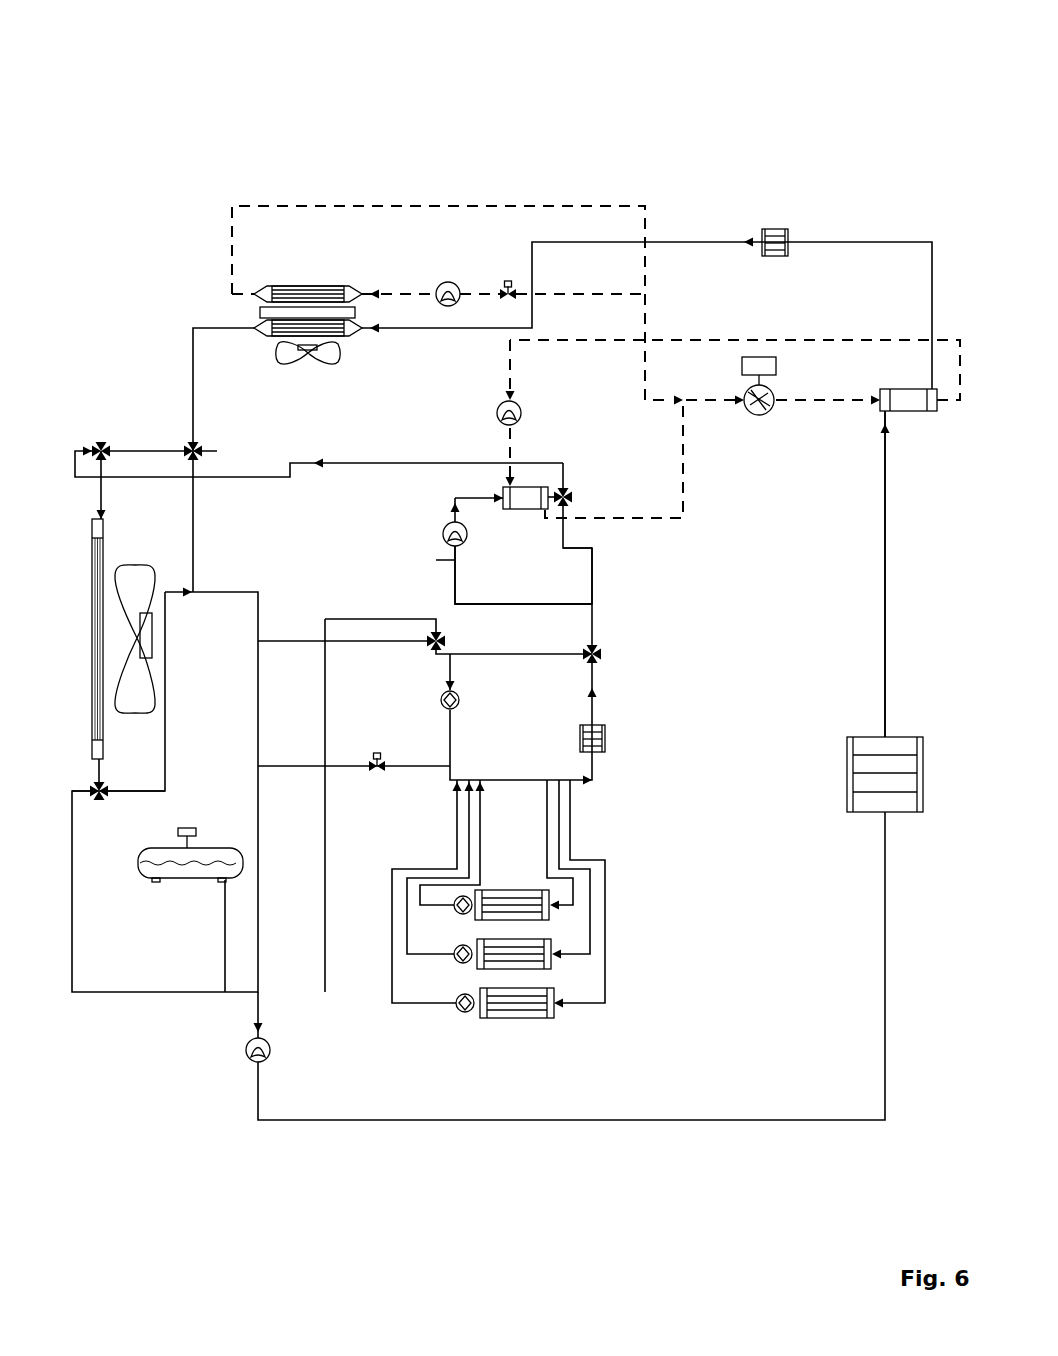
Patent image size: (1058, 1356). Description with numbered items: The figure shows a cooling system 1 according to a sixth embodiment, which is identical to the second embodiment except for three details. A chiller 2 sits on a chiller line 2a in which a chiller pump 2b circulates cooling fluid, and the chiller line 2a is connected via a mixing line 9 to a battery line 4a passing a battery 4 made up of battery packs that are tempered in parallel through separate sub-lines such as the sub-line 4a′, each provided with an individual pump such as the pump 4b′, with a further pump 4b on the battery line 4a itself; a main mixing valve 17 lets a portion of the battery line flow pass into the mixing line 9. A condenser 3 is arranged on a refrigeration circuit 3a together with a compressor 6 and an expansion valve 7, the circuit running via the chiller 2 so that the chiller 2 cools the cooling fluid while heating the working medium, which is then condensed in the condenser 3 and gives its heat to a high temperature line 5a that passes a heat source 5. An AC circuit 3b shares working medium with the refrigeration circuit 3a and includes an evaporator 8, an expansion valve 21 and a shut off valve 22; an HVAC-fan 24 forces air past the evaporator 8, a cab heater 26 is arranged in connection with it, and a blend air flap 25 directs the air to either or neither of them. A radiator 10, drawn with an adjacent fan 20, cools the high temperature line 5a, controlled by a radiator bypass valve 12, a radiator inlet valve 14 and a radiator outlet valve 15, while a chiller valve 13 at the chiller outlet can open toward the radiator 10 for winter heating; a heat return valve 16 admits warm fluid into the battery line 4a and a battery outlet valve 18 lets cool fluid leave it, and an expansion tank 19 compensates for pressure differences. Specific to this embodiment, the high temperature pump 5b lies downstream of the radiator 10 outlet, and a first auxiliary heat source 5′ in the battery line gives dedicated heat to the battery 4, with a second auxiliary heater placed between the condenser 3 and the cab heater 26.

The cooling system 1 is at (282, 128).
The chiller 2 is at (526, 510).
The chiller line 2a is at (592, 565).
The chiller pump 2b is at (446, 530).
The condenser 3 is at (898, 412).
The refrigeration circuit 3a is at (852, 340).
The AC circuit 3b is at (232, 222).
The battery 4 is at (553, 1036).
The battery line 4a is at (452, 735).
The first sub-line 4a′ is at (600, 1003).
The battery pump 4b is at (440, 700).
The first individual pump 4b′ is at (460, 1012).
The heat source 5 is at (857, 736).
The first auxiliary heat source 5′ is at (606, 738).
The high temperature line 5a is at (886, 632).
The high temperature pump 5b is at (246, 1048).
The compressor 6 is at (757, 416).
The expansion valve 7 is at (496, 413).
The evaporator 8 is at (320, 286).
The mixing line 9 is at (545, 604).
The radiator 10 is at (92, 660).
The radiator bypass valve 12 is at (217, 450).
The chiller valve 13 is at (572, 490).
The radiator inlet valve 14 is at (103, 444).
The radiator outlet valve 15 is at (92, 786).
The heat return valve 16 is at (445, 642).
The main mixing valve 17 is at (600, 653).
The battery outlet valve 18 is at (370, 776).
The expansion tank 19 is at (174, 880).
The fan 20 is at (136, 565).
The expansion valve 21 is at (442, 282).
The shut off valve 22 is at (504, 282).
The HVAC-fan 24 is at (324, 358).
The blend air flap 25 is at (260, 312).
The cab heater 26 is at (260, 325).